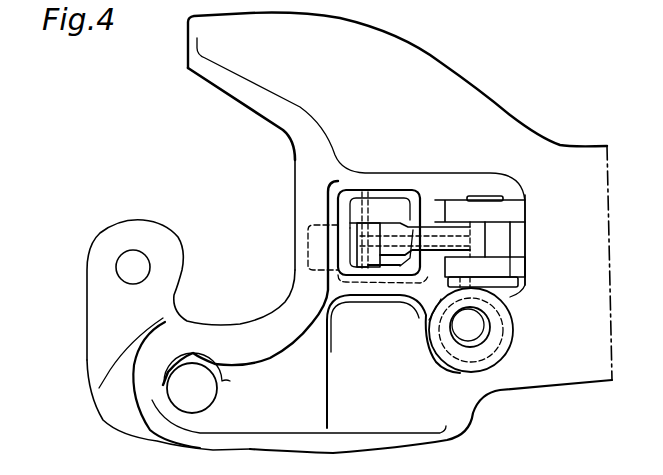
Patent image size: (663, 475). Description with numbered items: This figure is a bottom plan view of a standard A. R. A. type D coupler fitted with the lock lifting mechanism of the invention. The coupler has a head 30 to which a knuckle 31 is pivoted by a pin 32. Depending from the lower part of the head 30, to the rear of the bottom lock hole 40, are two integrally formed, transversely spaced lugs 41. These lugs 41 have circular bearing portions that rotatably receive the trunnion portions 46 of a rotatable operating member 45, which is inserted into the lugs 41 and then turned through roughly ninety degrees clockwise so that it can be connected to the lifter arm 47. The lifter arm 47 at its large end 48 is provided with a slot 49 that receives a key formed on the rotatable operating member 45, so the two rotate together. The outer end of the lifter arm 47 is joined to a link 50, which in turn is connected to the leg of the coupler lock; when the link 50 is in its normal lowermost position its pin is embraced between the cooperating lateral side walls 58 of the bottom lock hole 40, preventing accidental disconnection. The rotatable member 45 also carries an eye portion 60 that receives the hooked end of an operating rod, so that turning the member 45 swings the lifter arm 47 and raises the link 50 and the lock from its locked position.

The head 30 is at (598, 248).
The knuckle 31 is at (93, 307).
The pin 32 is at (180, 402).
The bottom lock hole 40 is at (410, 310).
The lugs 41 is at (513, 208).
The rotatable operating member 45 is at (505, 295).
The trunnion portions 46 is at (485, 196).
The lifter arm 47 is at (430, 237).
The large end 48 is at (512, 237).
The slot 49 is at (490, 237).
The link 50 is at (370, 220).
The lateral side walls 58 is at (387, 215).
The eye portion 60 is at (507, 342).